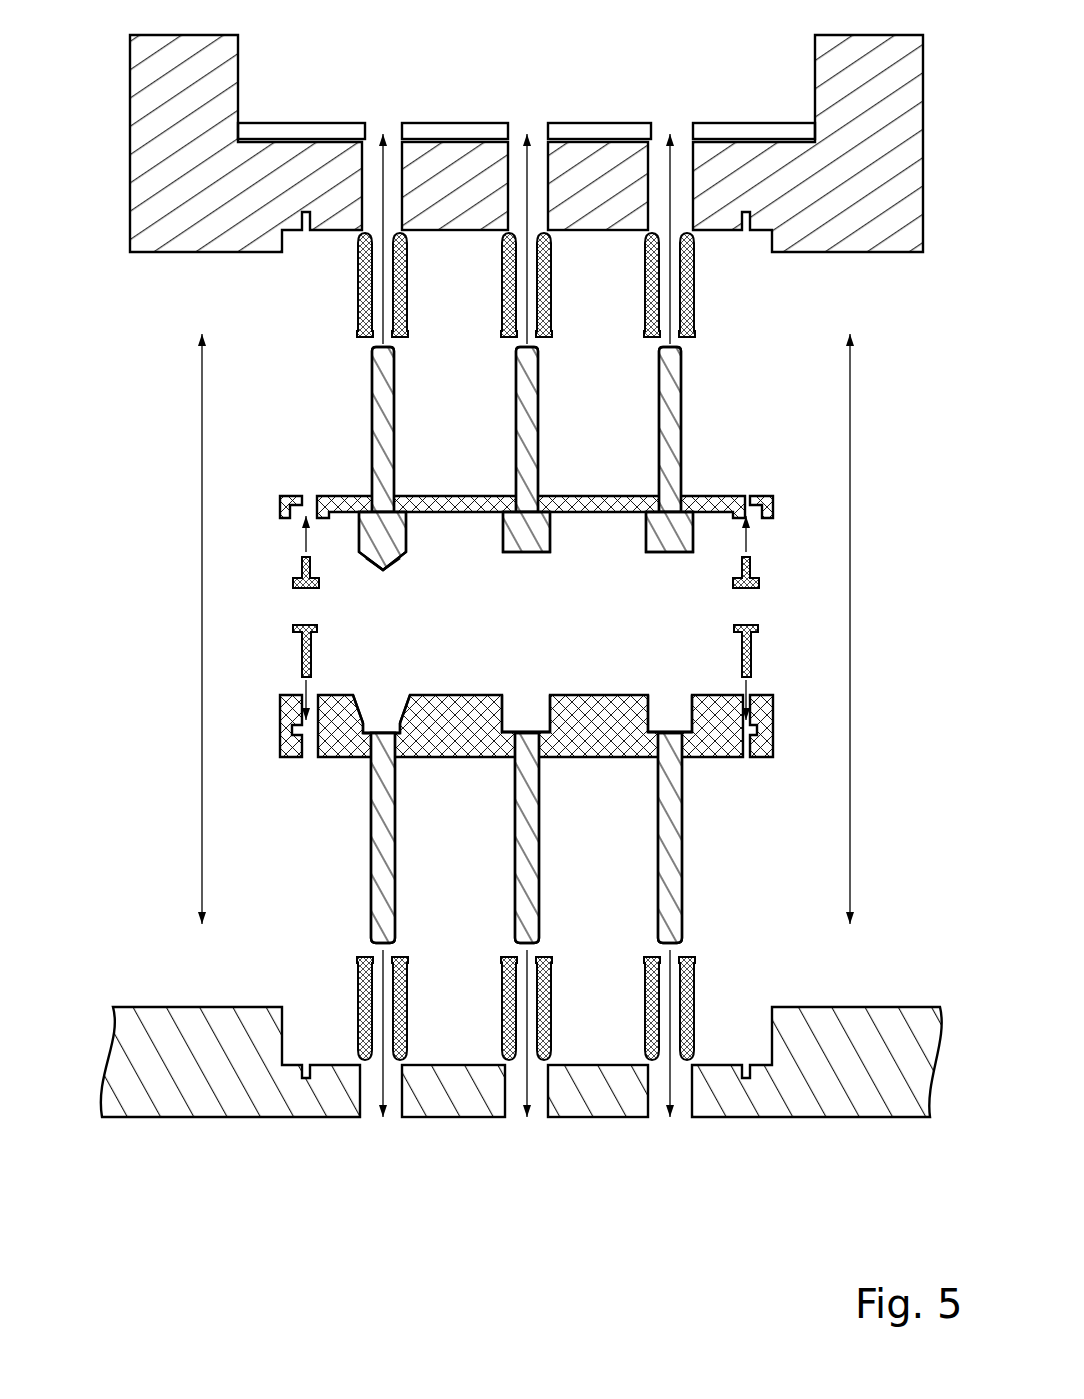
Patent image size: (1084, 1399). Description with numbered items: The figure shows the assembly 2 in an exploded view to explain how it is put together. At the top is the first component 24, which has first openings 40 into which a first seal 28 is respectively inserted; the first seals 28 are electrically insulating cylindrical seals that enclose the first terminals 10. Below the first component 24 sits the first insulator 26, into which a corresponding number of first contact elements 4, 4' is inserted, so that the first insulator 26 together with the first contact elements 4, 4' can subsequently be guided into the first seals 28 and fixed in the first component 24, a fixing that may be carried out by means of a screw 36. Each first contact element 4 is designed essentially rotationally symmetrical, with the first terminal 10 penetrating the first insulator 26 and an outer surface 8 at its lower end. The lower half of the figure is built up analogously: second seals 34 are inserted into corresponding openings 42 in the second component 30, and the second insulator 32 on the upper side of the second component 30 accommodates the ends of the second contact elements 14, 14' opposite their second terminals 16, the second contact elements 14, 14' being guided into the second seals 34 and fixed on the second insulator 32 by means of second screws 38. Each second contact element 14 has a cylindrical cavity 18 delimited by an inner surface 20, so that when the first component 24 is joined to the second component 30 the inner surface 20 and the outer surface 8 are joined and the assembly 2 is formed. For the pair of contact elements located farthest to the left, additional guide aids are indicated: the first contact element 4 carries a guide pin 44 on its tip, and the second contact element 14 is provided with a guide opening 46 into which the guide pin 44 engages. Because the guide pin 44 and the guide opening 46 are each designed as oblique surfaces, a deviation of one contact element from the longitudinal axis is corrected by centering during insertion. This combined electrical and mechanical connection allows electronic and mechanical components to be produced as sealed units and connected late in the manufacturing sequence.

The assembly 2 is at (118, 598).
The first contact element 4 is at (323, 401).
The first contact element 4' is at (469, 401).
The outer surface 8 is at (407, 536).
The first terminal 10 is at (395, 453).
The second contact element 14 is at (317, 845).
The second contact element 14' is at (458, 845).
The second terminal 16 is at (396, 893).
The cylindrical cavity 18 is at (383, 718).
The inner surface 20 is at (358, 753).
The first component 24 is at (906, 280).
The first insulator 26 is at (710, 496).
The first seal 28 is at (357, 293).
The second component 30 is at (912, 945).
The second insulator 32 is at (717, 757).
The second seal 34 is at (357, 985).
The screw 36 is at (295, 578).
The second screw 38 is at (300, 652).
The first opening 40 is at (392, 143).
The opening 42 is at (370, 1107).
The guide pin 44 is at (377, 562).
The guide opening 46 is at (361, 700).